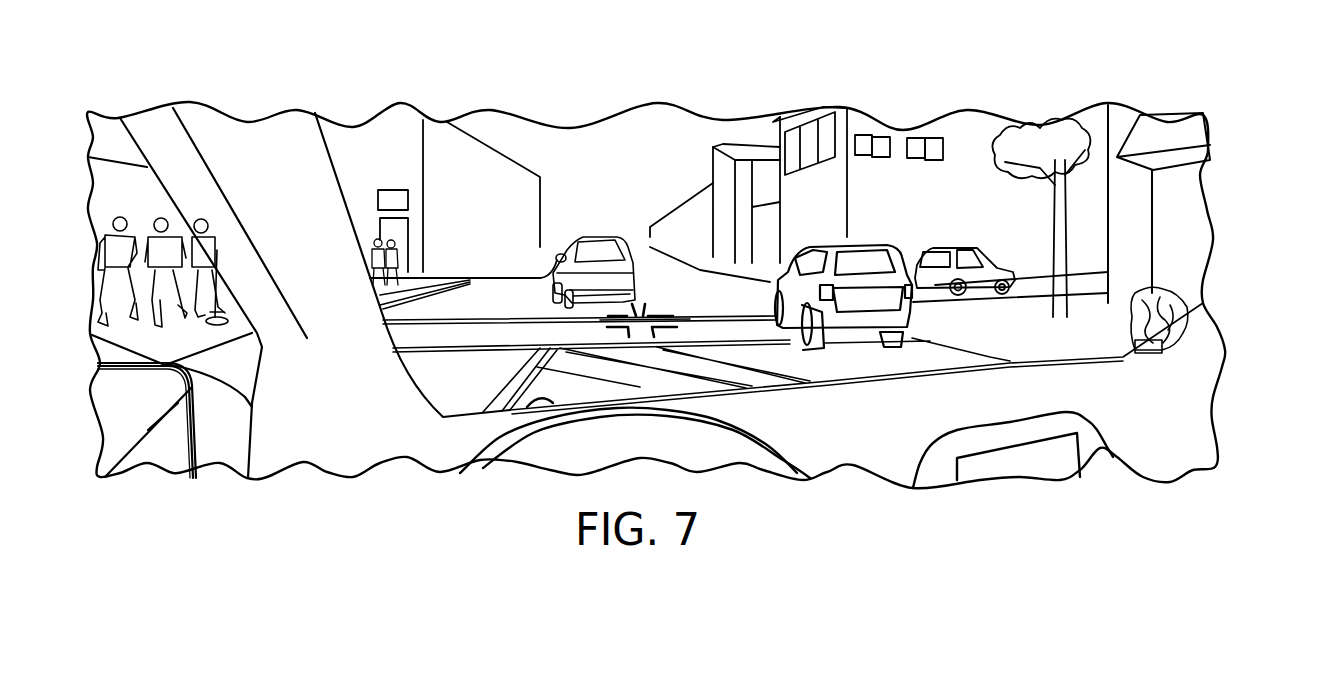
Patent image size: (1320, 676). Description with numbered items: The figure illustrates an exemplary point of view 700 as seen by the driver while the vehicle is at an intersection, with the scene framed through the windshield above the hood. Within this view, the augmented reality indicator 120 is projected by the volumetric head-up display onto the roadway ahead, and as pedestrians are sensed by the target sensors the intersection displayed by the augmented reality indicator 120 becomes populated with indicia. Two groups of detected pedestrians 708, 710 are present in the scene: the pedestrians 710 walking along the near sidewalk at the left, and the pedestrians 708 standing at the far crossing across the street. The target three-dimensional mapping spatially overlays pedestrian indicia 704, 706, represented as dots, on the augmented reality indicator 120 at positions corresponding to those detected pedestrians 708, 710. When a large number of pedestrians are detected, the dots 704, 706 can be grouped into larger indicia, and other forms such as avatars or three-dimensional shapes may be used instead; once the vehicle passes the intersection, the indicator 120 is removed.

The point of view 700 is at (1233, 184).
The detected pedestrian 710 is at (187, 220).
The detected pedestrian 708 is at (378, 240).
The pedestrian indicium 704 is at (632, 322).
The pedestrian indicium 706 is at (617, 327).
The augmented reality indicator 120 is at (645, 323).